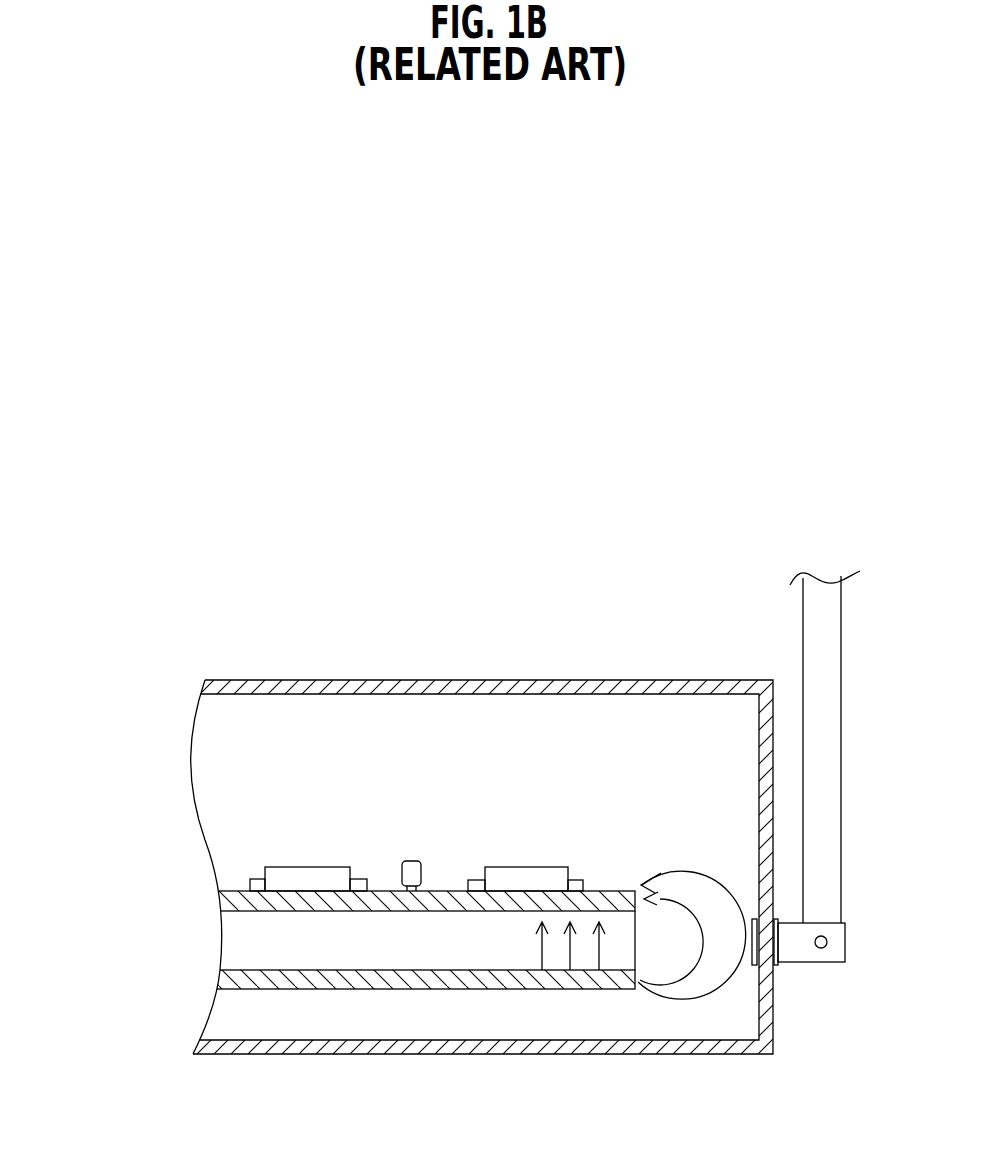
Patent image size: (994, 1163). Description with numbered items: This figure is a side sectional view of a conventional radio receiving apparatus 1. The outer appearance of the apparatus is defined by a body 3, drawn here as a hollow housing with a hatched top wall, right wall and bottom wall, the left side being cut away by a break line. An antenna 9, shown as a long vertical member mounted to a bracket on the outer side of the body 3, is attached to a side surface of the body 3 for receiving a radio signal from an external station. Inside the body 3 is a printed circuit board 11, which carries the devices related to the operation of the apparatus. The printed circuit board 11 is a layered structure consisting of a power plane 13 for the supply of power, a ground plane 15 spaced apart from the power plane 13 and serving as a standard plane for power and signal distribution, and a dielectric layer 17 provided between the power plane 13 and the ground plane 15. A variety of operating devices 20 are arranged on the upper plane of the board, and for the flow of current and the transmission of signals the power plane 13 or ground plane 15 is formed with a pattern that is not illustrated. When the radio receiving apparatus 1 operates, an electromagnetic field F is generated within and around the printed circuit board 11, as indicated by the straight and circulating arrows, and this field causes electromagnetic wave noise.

The radio receiving apparatus 1 is at (755, 372).
The body 3 is at (468, 677).
The antenna 9 is at (830, 722).
The printed circuit board 11 is at (112, 902).
The power plane 13 is at (212, 975).
The ground plane 15 is at (222, 898).
The dielectric layer 17 is at (236, 938).
The operating devices 20 is at (340, 867).
The electromagnetic field F is at (543, 960).